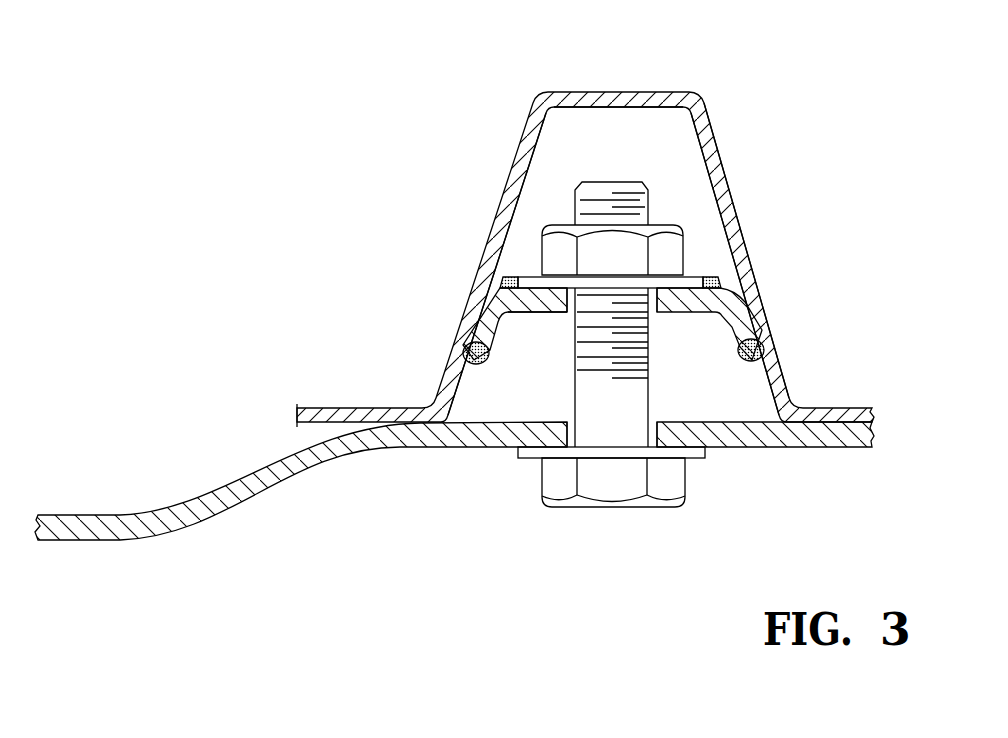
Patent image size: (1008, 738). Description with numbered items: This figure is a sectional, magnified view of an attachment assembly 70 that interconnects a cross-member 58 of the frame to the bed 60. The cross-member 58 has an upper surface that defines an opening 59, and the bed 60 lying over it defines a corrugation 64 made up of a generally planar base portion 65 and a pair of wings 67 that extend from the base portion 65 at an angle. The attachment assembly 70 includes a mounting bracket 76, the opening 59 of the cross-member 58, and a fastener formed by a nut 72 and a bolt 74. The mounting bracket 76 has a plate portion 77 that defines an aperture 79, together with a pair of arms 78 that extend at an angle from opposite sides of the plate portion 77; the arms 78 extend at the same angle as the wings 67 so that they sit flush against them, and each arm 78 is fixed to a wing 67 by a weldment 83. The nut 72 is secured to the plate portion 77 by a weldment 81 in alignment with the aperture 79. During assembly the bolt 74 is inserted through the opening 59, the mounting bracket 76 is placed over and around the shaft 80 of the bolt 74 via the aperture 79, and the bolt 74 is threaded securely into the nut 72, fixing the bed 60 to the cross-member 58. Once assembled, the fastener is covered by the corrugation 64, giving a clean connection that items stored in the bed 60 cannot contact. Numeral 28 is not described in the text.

The vehicle 28 is at (433, 12).
The cross-member 58 is at (818, 437).
The opening 59 is at (578, 433).
The bed 60 is at (744, 246).
The corrugation 64 is at (664, 90).
The base portion 65 is at (597, 98).
The wing 67 is at (510, 165).
The attachment assembly 70 is at (291, 153).
The nut 72 is at (672, 242).
The bolt 74 is at (678, 483).
The mounting bracket 76 is at (515, 320).
The plate portion 77 is at (545, 308).
The arm 78 is at (478, 320).
The aperture 79 is at (658, 310).
The shaft 80 is at (632, 352).
The weldment 81 is at (507, 280).
The weldment 83 is at (473, 355).